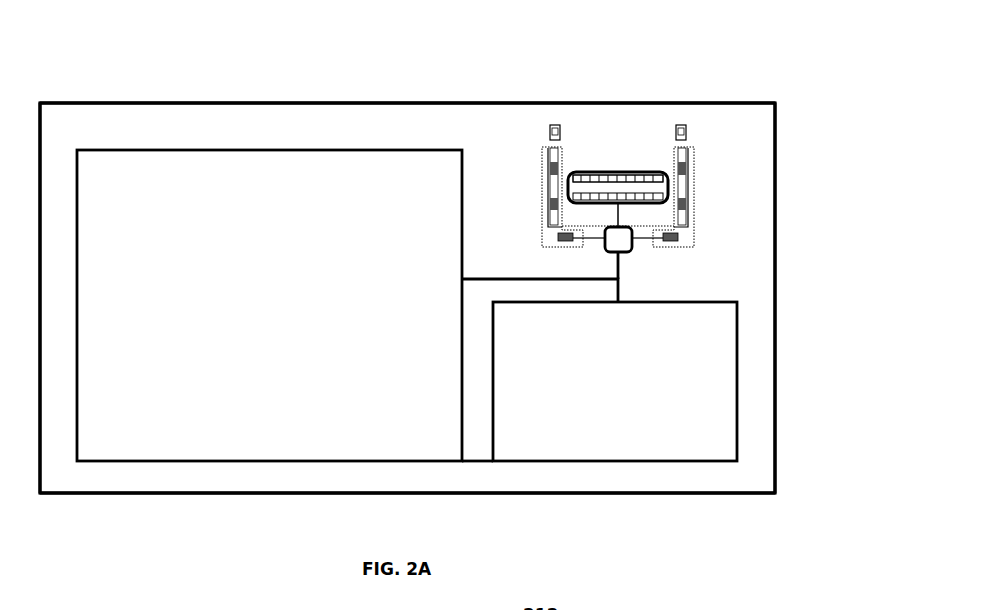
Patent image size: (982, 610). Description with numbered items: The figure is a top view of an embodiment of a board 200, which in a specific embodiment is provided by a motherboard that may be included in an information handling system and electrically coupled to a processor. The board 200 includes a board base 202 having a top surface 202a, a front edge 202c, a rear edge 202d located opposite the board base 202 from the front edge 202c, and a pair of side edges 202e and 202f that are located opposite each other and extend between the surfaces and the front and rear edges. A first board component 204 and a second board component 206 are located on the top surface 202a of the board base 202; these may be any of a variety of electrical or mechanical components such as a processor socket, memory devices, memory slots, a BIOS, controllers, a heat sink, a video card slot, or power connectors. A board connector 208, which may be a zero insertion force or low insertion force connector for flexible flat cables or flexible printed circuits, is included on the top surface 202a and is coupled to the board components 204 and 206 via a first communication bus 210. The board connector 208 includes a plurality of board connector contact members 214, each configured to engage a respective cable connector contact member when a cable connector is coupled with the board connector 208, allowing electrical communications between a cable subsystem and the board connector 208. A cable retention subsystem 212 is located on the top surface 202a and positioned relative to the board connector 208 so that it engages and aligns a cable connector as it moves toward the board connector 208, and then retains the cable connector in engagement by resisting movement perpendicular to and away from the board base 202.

The board 200 is at (407, 259).
The board base 202 is at (440, 268).
The top surface 202a is at (524, 495).
The front edge 202c is at (407, 513).
The rear edge 202d is at (407, 81).
The side edge 202e is at (91, 328).
The side edge 202f is at (807, 298).
The first board component 204 is at (269, 270).
The second board component 206 is at (637, 414).
The board connector 208 is at (596, 135).
The first communication bus 210 is at (540, 253).
The cable retention subsystem 212 is at (581, 167).
The board connector contact members 214 is at (650, 123).